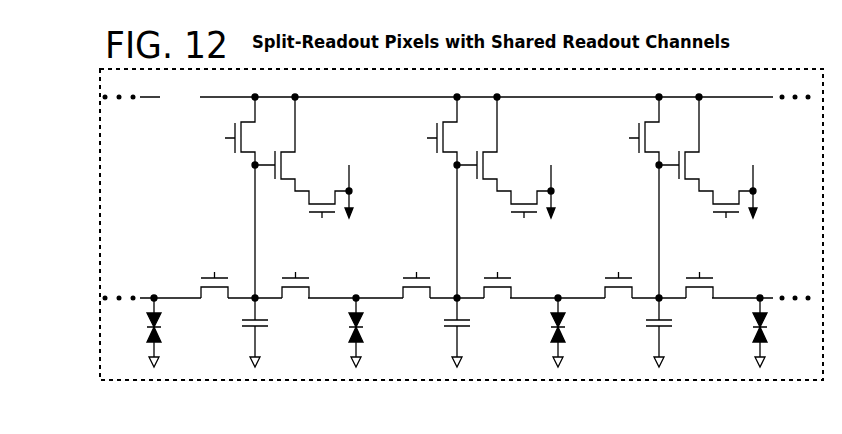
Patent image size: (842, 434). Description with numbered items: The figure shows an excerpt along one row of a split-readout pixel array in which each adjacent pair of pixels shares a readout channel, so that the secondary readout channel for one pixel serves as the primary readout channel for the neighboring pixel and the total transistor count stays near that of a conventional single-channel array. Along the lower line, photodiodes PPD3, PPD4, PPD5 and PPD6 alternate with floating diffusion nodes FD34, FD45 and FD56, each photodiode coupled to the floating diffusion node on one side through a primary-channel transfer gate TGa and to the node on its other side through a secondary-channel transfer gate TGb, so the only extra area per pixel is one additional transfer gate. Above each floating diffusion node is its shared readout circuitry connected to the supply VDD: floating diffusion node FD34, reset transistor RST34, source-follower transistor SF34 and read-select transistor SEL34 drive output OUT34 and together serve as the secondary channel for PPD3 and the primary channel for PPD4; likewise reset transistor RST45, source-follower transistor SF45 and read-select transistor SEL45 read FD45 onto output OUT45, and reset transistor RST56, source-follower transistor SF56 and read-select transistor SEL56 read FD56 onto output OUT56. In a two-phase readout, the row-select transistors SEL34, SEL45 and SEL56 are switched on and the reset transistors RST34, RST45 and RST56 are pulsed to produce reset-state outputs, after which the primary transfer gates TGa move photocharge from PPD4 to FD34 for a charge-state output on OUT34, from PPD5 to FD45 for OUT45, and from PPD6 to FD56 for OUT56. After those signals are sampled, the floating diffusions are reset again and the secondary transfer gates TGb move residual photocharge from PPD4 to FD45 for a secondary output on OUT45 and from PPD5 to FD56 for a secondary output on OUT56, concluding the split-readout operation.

The supply voltage VDD is at (456, 97).
The reset transistor RST34 is at (217, 129).
The source-follower transistor SF34 is at (302, 149).
The read-select transistor SEL34 is at (323, 226).
The output OUT34 is at (377, 191).
The reset transistor RST45 is at (419, 129).
The source-follower transistor SF45 is at (504, 149).
The read-select transistor SEL45 is at (525, 226).
The output OUT45 is at (579, 191).
The reset transistor RST56 is at (621, 129).
The source-follower transistor SF56 is at (706, 149).
The read-select transistor SEL56 is at (727, 226).
The output OUT56 is at (781, 191).
The primary-channel transfer gate TGa is at (497, 276).
The secondary-channel transfer gate TGb is at (416, 276).
The photodiode PPD3 is at (174, 331).
The photodiode PPD4 is at (376, 331).
The photodiode PPD5 is at (578, 331).
The photodiode PPD6 is at (780, 331).
The floating diffusion node FD34 is at (274, 264).
The floating diffusion node FD45 is at (476, 264).
The floating diffusion node FD56 is at (678, 264).